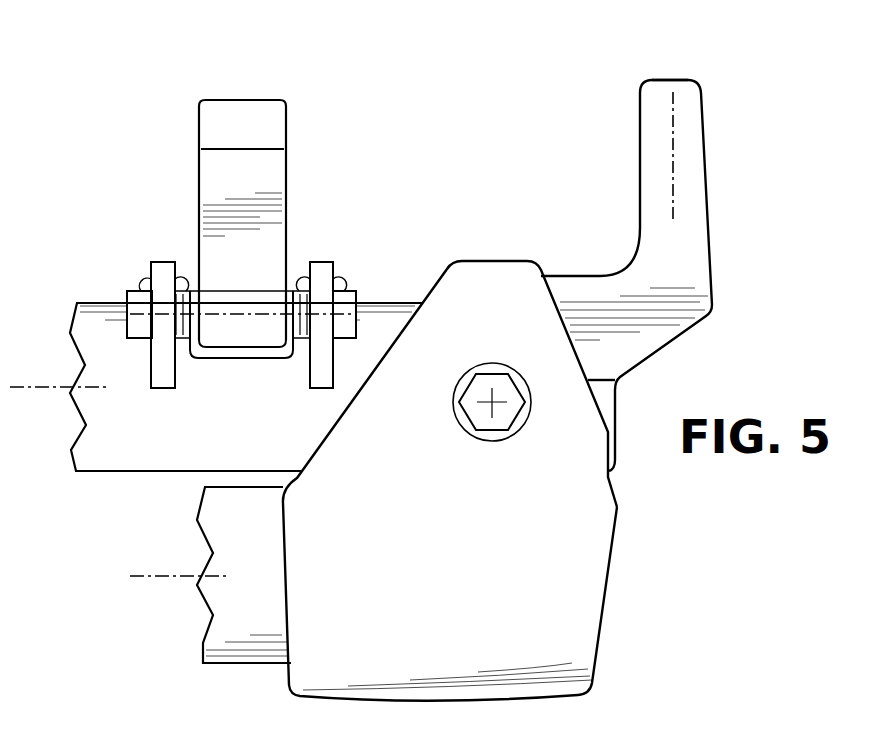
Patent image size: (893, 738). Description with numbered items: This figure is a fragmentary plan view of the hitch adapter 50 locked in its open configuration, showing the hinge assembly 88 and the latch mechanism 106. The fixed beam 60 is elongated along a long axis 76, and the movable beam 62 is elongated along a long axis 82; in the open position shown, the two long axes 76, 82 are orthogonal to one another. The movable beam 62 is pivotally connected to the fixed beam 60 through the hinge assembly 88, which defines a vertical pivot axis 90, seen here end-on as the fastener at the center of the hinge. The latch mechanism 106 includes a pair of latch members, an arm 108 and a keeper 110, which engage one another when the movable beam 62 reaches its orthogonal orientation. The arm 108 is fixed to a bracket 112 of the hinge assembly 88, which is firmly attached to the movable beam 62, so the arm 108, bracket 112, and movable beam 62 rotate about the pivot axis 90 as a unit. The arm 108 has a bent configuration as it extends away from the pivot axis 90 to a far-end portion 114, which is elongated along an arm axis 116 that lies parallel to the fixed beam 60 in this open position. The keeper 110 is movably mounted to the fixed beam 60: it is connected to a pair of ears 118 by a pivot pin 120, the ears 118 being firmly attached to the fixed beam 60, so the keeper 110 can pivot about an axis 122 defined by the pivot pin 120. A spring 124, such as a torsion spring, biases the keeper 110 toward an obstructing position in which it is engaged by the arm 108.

The hitch adapter 50 is at (122, 82).
The fixed beam 60 is at (82, 473).
The movable beam 62 is at (215, 668).
The long axis 76 is at (48, 385).
The long axis 82 is at (170, 575).
The hinge assembly 88 is at (408, 272).
The pivot axis 90 is at (480, 403).
The latch mechanism 106 is at (418, 111).
The arm 108 is at (708, 194).
The keeper 110 is at (245, 99).
The bracket 112 is at (610, 595).
The far-end portion 114 is at (703, 97).
The arm axis 116 is at (670, 150).
The ears 118 is at (163, 261).
The pivot pin 120 is at (136, 284).
The axis 122 is at (232, 320).
The spring 124 is at (263, 362).